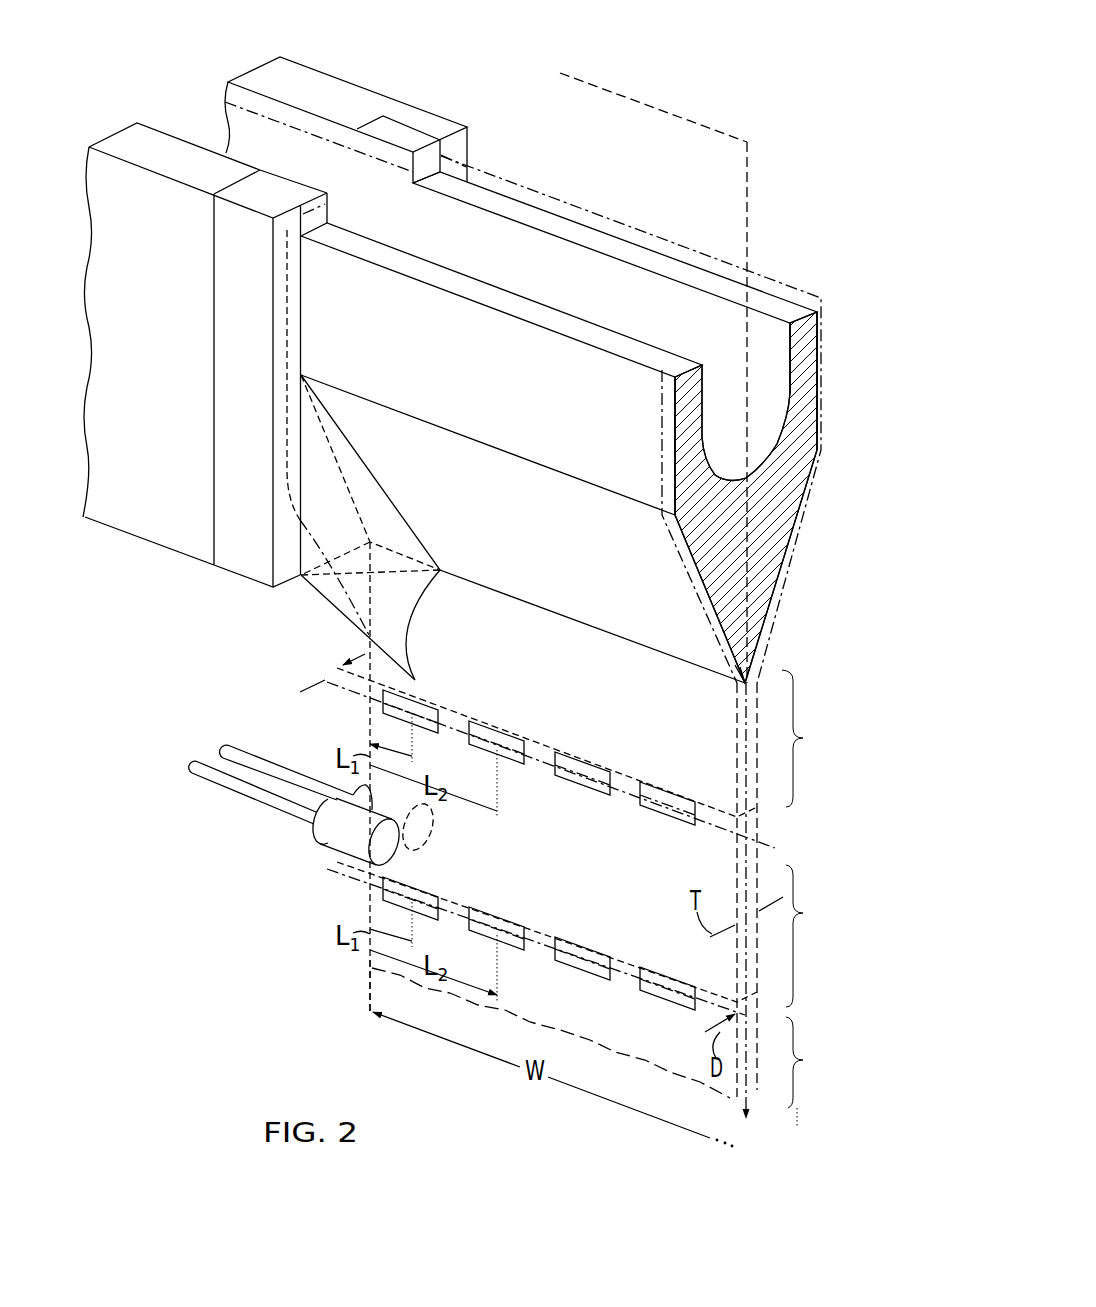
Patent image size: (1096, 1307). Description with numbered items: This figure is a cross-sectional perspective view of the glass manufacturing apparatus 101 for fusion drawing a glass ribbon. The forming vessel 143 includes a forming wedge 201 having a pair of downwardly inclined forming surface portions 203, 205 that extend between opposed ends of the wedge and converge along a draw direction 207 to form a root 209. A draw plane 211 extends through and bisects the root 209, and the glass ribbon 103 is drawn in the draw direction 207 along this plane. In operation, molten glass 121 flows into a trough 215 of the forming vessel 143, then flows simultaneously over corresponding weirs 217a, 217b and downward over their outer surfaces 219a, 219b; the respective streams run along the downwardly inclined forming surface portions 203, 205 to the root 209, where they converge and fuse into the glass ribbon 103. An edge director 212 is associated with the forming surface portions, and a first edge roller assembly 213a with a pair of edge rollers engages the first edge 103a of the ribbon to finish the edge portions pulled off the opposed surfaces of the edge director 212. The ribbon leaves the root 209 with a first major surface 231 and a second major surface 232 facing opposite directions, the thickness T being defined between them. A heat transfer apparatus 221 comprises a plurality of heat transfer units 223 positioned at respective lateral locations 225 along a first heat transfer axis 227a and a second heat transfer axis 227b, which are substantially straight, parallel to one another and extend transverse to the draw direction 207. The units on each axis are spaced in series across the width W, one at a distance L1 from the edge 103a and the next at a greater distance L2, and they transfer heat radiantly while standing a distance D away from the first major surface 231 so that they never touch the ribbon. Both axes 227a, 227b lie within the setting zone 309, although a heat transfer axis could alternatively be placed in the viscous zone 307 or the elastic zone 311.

The glass manufacturing apparatus 101 is at (722, 88).
The glass ribbon 103 is at (633, 1057).
The first edge 103a is at (368, 978).
The molten glass 121 is at (312, 123).
The forming vessel 143 is at (802, 226).
The forming wedge 201 is at (565, 182).
The downwardly inclined forming surface portion 203 is at (720, 627).
The downwardly inclined forming surface portion 205 is at (773, 607).
The draw direction 207 is at (750, 1103).
The root 209 is at (745, 684).
The draw plane 211 is at (750, 158).
The edge director 212 is at (342, 612).
The first edge roller assembly 213a is at (316, 854).
The trough 215 is at (788, 387).
The weir 217a is at (516, 310).
The weir 217b is at (627, 252).
The outer surface 219a is at (675, 460).
The outer surface 219b is at (822, 350).
The heat transfer apparatus 221 is at (270, 718).
The heat transfer unit 223 is at (386, 707).
The lateral location 225 is at (410, 712).
The first heat transfer axis 227a is at (768, 848).
The second heat transfer axis 227b is at (776, 1016).
The first major surface 231 is at (688, 963).
The second major surface 232 is at (760, 879).
The viscous zone 307 is at (817, 738).
The setting zone 309 is at (818, 936).
The elastic zone 311 is at (816, 1072).